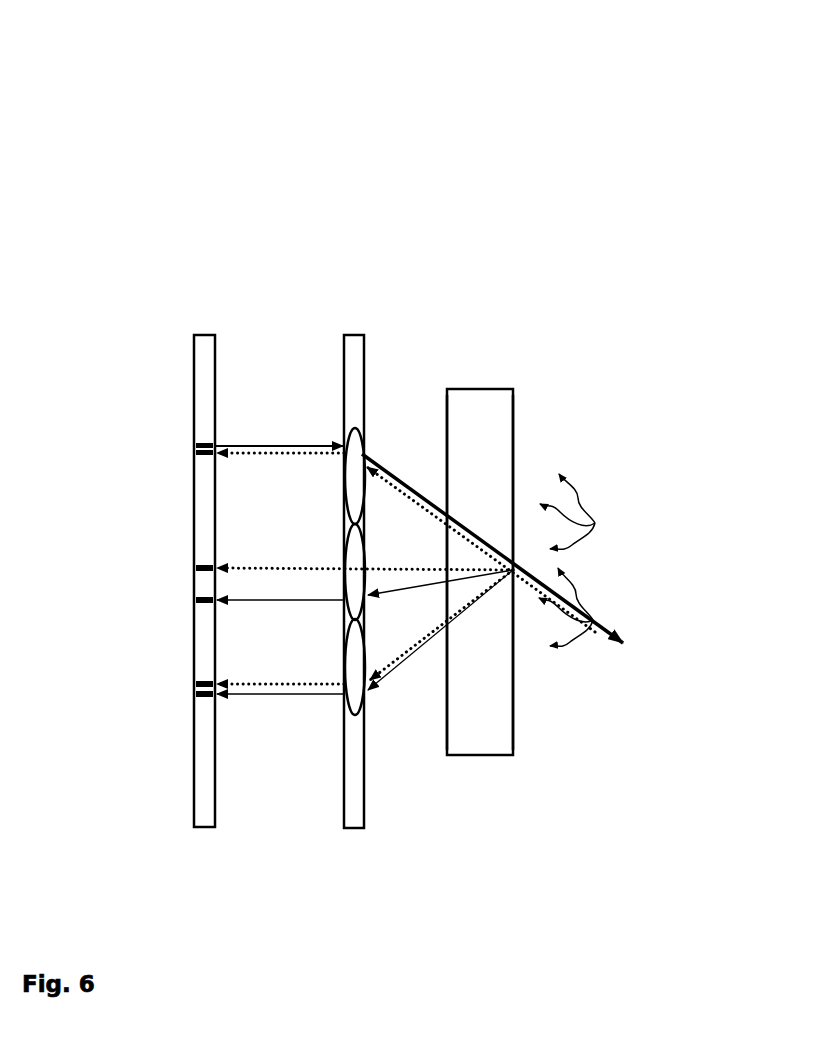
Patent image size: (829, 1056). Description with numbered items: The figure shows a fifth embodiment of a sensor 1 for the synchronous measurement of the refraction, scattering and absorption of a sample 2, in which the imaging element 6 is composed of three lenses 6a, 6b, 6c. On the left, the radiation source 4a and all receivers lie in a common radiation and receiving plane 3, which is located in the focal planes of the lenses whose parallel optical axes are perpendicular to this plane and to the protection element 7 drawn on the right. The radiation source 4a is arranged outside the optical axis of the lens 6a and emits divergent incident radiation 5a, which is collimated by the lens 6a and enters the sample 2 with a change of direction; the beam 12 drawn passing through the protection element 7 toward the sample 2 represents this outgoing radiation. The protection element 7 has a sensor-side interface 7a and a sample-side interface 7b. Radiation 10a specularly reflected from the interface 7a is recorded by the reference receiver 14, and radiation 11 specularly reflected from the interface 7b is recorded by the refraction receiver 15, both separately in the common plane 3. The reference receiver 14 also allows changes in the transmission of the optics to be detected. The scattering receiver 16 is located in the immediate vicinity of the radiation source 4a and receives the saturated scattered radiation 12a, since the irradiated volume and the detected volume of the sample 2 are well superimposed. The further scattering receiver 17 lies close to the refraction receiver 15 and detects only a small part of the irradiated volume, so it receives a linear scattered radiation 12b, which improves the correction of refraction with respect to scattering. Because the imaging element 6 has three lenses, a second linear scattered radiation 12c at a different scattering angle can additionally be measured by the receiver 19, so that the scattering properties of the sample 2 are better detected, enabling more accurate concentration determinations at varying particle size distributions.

The sensor 1 is at (133, 167).
The sample 2 is at (598, 472).
The radiation and receiving plane 3 is at (203, 350).
The radiation source 4a is at (217, 446).
The incident radiation 5a is at (278, 440).
The imaging element 6 is at (357, 405).
The lens 6a is at (356, 340).
The lens 6b is at (357, 712).
The lens 6c is at (368, 693).
The protection element 7 is at (480, 408).
The interface 7a is at (447, 707).
The interface 7b is at (512, 702).
The reference radiation 10a is at (423, 538).
The radiation specularly reflected from sample-side interface 11 is at (385, 677).
The transmitted beam 12 is at (580, 627).
The saturated scattered radiation 12a is at (293, 445).
The linear scattered radiation 12b is at (292, 683).
The linear scattered radiation 12c is at (242, 568).
The reference receiver 14 is at (194, 602).
The refraction receiver 15 is at (215, 695).
The scattering receiver 16 is at (194, 455).
The scattering receiver 17 is at (194, 688).
The receiver 19 is at (194, 570).